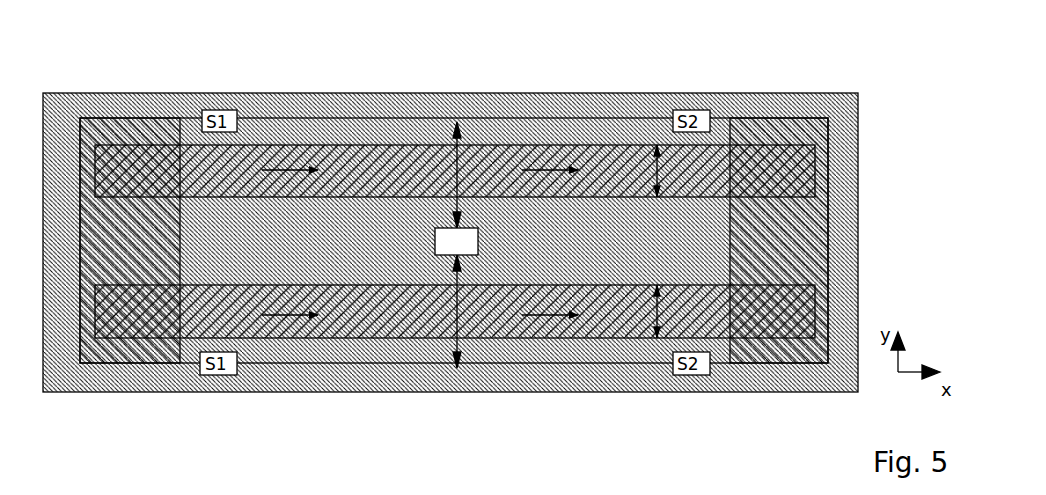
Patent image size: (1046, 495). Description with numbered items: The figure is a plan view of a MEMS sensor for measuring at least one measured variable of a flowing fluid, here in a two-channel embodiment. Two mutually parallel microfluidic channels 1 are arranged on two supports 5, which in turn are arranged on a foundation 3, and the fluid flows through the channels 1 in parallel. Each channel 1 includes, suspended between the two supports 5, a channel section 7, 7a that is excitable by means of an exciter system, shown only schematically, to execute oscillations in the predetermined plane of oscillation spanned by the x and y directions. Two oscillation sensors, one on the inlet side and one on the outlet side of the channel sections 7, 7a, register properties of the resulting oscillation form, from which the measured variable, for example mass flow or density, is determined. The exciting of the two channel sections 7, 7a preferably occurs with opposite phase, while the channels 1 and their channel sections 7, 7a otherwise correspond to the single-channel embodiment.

The microfluidic channel 1 is at (310, 143).
The foundation 3 is at (147, 373).
The support 5 is at (128, 140).
The channel section 7 is at (411, 247).
The channel section 7a is at (440, 172).